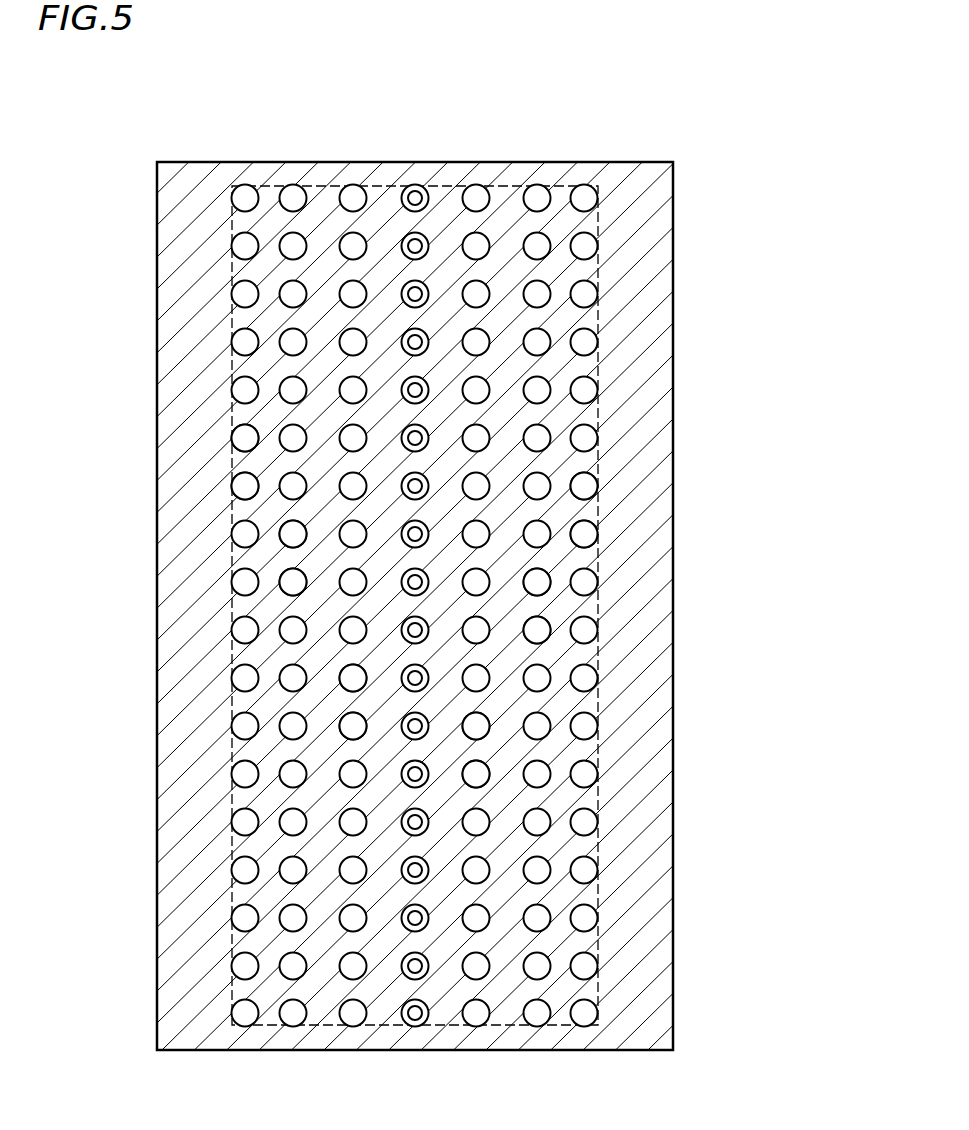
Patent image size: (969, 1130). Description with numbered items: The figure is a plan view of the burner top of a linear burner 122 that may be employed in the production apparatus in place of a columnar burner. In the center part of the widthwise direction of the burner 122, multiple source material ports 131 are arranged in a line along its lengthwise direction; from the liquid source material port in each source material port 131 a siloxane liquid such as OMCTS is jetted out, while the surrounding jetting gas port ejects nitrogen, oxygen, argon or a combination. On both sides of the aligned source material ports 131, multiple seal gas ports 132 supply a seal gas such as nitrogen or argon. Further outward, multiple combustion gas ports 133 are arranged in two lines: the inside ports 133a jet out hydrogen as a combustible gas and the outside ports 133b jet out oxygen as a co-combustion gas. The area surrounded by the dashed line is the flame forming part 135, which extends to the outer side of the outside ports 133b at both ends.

The linear burner 122 is at (365, 154).
The flame forming part 135 is at (598, 318).
The source material port 131 is at (428, 395).
The combustion gas port 133 is at (415, 606).
The inside port 133a is at (293, 535).
The outside port 133b is at (248, 487).
The seal gas port 132 is at (350, 679).